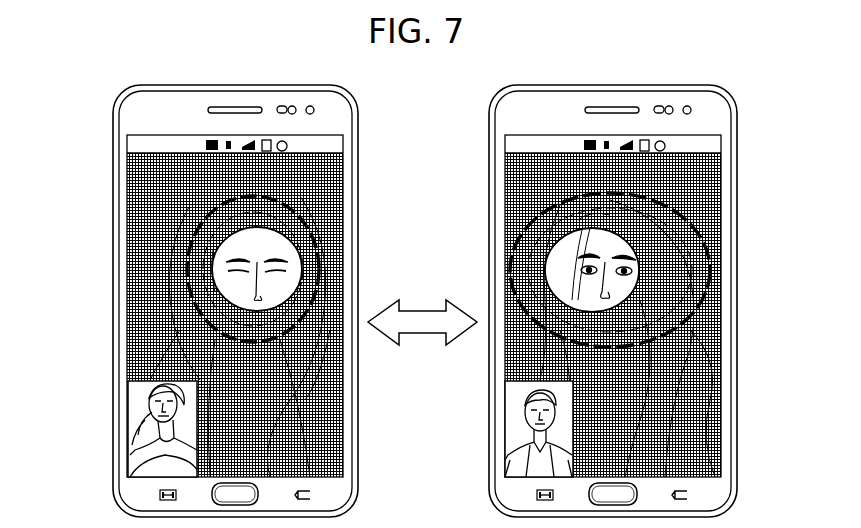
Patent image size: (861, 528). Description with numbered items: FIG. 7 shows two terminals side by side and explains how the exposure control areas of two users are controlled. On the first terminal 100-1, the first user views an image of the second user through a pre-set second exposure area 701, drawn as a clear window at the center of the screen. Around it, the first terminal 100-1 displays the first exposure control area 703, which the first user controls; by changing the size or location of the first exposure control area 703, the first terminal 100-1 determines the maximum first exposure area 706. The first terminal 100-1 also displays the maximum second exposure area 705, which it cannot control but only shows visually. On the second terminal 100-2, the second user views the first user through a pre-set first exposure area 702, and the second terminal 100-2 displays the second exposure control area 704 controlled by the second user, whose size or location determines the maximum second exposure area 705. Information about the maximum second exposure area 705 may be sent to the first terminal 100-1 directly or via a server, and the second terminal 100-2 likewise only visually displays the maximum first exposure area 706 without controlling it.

The first terminal 100-1 is at (291, 86).
The second terminal 100-2 is at (668, 86).
The second exposure area 701 is at (212, 268).
The first exposure area 702 is at (700, 270).
The first exposure control area 703 is at (187, 230).
The second exposure control area 704 is at (708, 238).
The maximum second exposure area 705 is at (203, 250).
The maximum first exposure area 706 is at (705, 308).